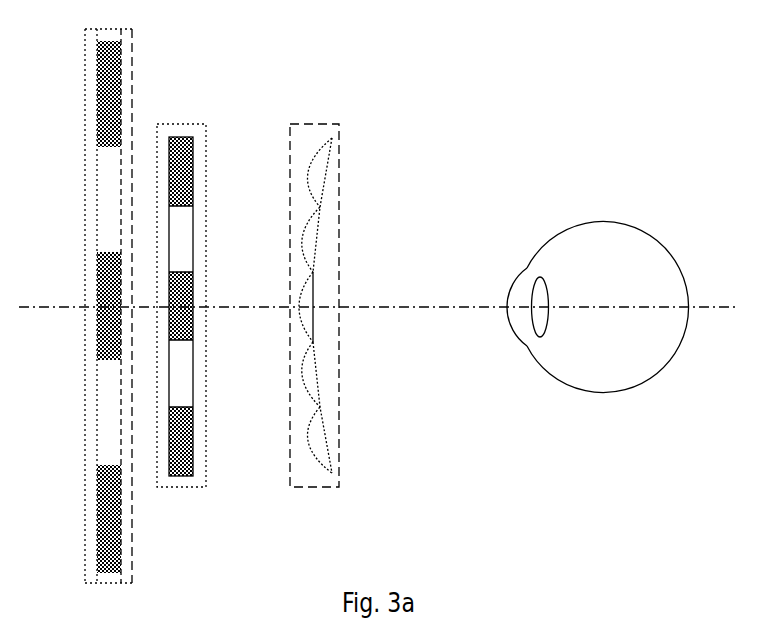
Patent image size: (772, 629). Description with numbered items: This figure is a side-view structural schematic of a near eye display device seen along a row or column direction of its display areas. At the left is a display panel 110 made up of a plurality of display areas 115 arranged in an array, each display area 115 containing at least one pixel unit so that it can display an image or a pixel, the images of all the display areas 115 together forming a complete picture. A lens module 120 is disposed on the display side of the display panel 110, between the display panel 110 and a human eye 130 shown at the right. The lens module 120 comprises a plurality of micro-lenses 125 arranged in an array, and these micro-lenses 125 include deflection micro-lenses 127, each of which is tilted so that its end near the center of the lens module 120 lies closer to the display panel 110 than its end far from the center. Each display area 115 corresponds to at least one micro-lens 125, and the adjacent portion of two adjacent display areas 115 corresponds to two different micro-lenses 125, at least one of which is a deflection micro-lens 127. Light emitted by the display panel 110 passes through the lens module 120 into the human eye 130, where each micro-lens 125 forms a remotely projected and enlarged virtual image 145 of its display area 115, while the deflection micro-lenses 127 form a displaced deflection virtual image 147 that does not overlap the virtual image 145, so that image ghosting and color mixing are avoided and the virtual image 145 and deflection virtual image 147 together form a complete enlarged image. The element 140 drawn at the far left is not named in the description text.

The display panel 110 is at (220, 287).
The display area 115 is at (193, 445).
The lens module 120 is at (365, 287).
The micro-lens 125 is at (374, 440).
The deflection micro-lens 127 is at (318, 448).
The human eye 130 is at (591, 233).
The backlight / light source array 140 is at (111, 306).
The virtual image 145 is at (105, 280).
The deflection virtual image 147 is at (105, 435).